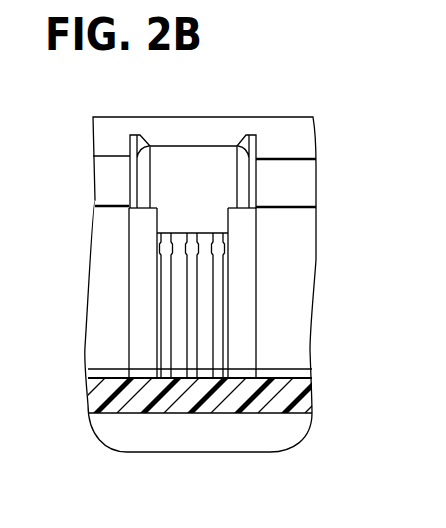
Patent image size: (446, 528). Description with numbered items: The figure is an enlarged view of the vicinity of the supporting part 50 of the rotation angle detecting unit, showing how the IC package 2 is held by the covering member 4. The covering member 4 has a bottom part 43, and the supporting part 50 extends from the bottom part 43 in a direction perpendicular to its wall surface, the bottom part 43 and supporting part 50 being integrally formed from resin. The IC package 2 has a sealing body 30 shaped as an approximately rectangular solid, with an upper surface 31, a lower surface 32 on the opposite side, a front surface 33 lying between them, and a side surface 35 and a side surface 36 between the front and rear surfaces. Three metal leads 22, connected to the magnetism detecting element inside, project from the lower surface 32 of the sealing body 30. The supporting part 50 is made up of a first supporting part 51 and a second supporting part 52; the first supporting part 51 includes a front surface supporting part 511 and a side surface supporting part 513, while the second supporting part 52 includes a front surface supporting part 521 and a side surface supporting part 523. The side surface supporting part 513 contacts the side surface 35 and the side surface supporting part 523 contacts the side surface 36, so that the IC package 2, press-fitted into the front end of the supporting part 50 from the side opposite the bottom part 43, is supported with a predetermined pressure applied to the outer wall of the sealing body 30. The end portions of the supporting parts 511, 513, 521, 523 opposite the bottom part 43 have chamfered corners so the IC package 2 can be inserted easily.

The covering member 4 is at (306, 117).
The IC package 2 is at (165, 170).
The sealing body 30 is at (215, 187).
The upper surface 31 is at (221, 150).
The lower surface 32 is at (200, 235).
The front surface 33 is at (191, 163).
The side surface 35 is at (132, 140).
The side surface 36 is at (256, 150).
The bottom part 43 is at (121, 415).
The leads 22 is at (170, 392).
The supporting part 50 is at (128, 247).
The first supporting part 51 is at (129, 291).
The second supporting part 52 is at (258, 285).
The front surface supporting part 511 is at (129, 215).
The side surface supporting part 513 is at (130, 170).
The front surface supporting part 521 is at (230, 215).
The side surface supporting part 523 is at (245, 163).